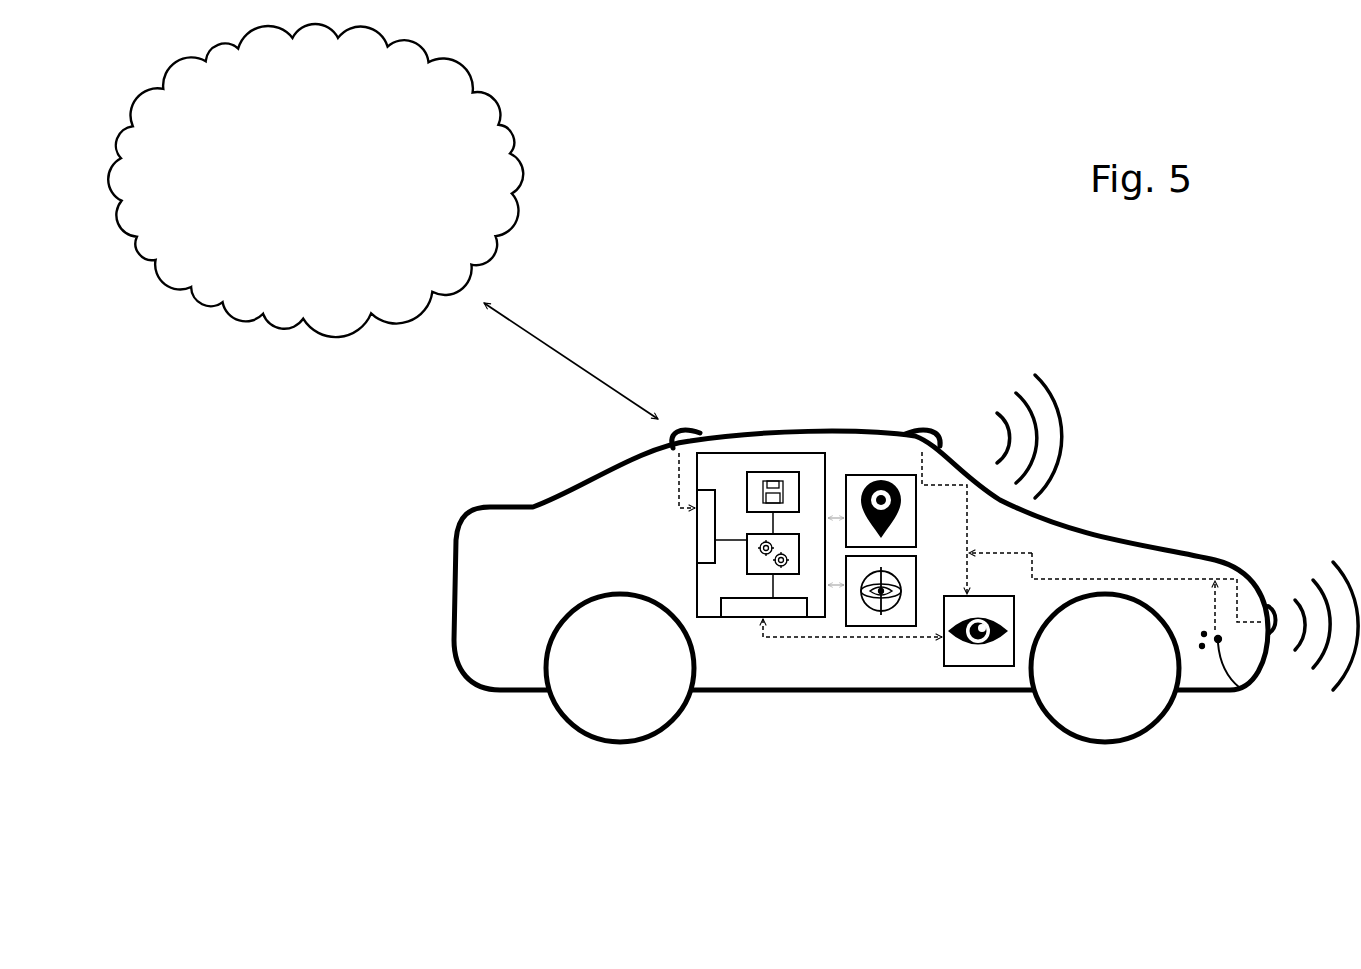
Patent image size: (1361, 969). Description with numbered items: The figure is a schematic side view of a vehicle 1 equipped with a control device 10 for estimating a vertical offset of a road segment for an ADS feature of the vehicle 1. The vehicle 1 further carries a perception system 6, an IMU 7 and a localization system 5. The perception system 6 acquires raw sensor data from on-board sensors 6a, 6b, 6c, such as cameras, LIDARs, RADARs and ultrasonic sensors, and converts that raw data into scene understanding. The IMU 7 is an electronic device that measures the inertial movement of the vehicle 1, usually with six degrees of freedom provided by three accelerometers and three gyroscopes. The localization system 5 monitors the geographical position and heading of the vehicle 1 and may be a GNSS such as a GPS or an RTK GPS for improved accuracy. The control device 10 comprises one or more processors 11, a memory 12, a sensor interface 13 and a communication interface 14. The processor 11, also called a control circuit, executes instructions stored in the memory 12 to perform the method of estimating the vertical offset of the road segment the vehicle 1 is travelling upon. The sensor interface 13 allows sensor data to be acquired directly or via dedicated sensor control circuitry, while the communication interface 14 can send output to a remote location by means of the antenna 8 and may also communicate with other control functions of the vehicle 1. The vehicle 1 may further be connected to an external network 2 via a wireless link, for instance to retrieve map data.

The vehicle 1 is at (472, 684).
The external network 2 is at (444, 54).
The localization system 5 is at (863, 475).
The perception system 6 is at (992, 667).
The sensor 6a is at (1240, 688).
The sensor 6b is at (1272, 608).
The sensor 6c is at (928, 433).
The IMU 7 is at (866, 626).
The antenna 8 is at (688, 437).
The control device 10 is at (751, 502).
The processor 11 is at (799, 558).
The memory 12 is at (773, 471).
The sensor interface 13 is at (748, 611).
The communication interface 14 is at (698, 541).